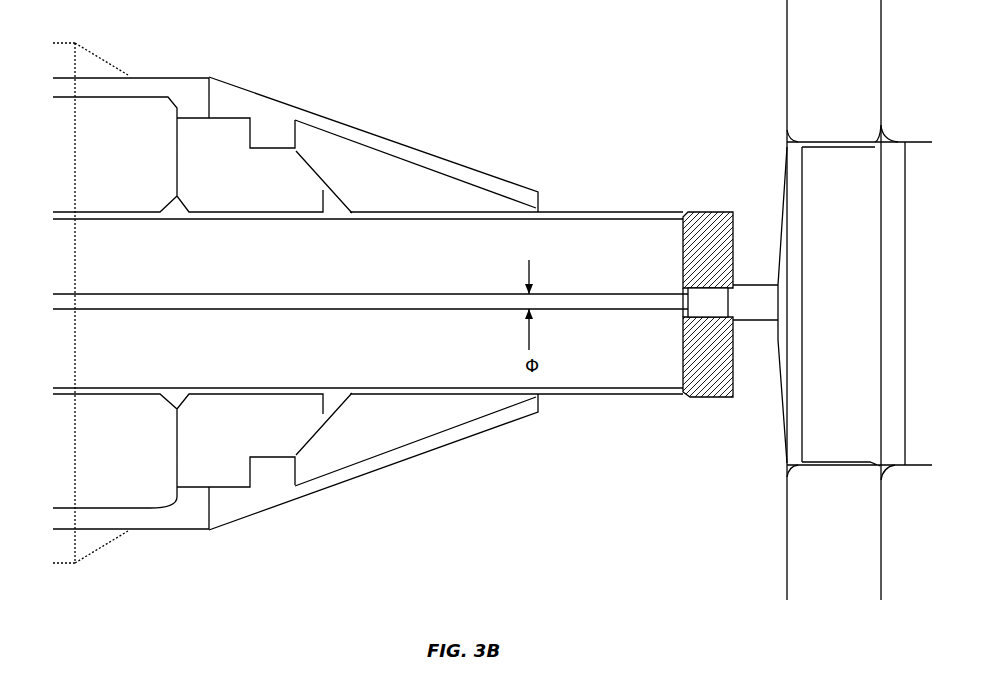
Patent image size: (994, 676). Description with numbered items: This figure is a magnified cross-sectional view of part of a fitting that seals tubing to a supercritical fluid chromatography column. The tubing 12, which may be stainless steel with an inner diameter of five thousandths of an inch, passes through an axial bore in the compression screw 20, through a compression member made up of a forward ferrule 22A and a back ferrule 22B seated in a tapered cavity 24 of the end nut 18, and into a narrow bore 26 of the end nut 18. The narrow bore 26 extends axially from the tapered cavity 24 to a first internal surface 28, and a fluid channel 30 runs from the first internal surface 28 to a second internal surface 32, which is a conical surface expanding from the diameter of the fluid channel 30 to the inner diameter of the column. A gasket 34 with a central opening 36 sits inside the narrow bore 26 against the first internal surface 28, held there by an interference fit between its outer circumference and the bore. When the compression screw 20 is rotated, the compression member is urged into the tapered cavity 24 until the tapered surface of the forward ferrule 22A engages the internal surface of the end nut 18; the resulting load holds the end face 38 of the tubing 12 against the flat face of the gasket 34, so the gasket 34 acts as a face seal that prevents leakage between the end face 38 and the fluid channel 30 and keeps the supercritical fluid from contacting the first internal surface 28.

The tubing 12 is at (551, 233).
The end nut 18 is at (600, 85).
The compression screw 20 is at (150, 509).
The forward ferrule 22A is at (332, 139).
The back ferrule 22B is at (217, 124).
The tapered cavity 24 is at (265, 503).
The narrow bore 26 is at (600, 396).
The first internal surface 28 is at (726, 337).
The fluid channel 30 is at (764, 287).
The second internal surface 32 is at (778, 340).
The gasket 34 is at (707, 398).
The central opening 36 is at (707, 288).
The end face 38 is at (690, 360).